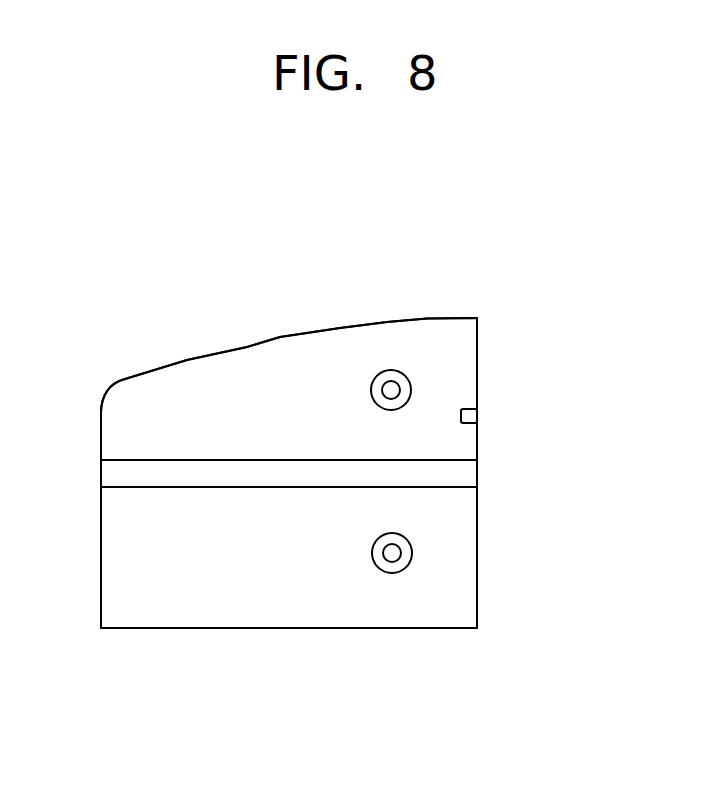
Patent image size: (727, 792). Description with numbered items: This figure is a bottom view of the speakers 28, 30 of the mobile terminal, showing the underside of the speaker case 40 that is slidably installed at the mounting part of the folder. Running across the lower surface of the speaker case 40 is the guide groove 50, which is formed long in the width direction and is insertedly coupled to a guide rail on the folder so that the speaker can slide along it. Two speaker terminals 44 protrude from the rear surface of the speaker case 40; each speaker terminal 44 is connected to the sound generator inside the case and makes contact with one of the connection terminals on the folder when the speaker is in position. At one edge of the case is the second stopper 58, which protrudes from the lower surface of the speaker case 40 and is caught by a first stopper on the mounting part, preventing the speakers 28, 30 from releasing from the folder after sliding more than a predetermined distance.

The speaker 28 is at (360, 482).
The speaker 30 is at (360, 482).
The speaker case 40 is at (280, 358).
The speaker terminal 44 is at (391, 390).
The guide groove 50 is at (280, 472).
The second stopper 58 is at (469, 415).